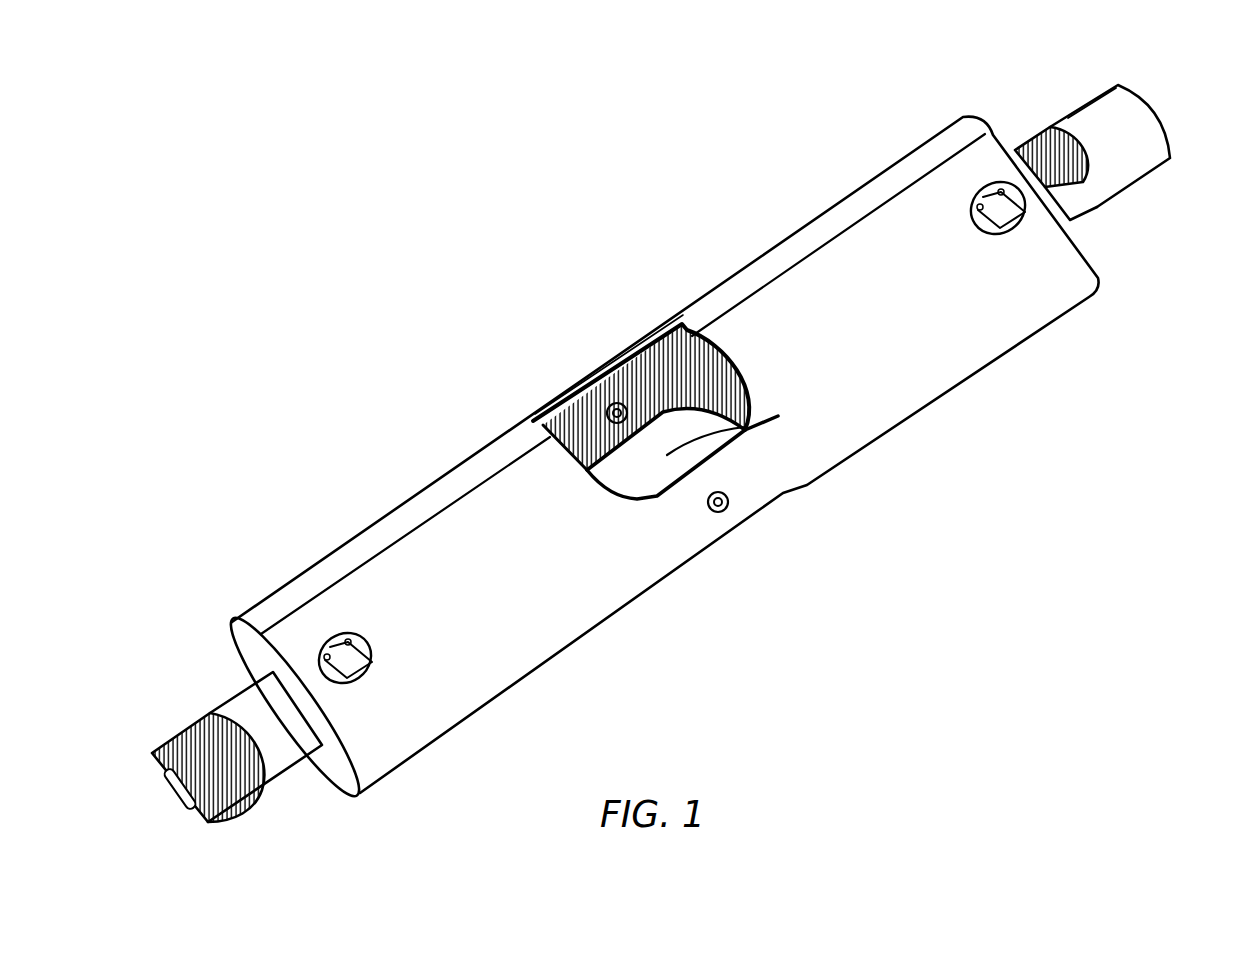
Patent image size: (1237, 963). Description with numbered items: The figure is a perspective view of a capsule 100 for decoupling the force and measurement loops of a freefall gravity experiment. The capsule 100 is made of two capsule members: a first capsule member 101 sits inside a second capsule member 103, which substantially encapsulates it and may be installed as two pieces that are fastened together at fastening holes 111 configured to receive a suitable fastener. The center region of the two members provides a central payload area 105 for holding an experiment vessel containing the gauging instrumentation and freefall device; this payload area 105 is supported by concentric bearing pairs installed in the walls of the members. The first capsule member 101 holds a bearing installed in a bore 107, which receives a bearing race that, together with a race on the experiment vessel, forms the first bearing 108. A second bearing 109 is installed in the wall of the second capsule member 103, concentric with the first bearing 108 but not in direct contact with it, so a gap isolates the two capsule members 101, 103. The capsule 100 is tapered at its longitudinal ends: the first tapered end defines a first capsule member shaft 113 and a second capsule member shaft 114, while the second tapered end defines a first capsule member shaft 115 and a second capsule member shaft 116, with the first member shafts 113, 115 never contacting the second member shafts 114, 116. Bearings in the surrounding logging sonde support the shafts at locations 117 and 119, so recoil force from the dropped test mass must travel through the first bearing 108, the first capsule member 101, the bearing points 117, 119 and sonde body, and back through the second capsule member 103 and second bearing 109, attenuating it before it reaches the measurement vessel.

The capsule 100 is at (522, 256).
The first capsule member 101 is at (637, 353).
The second capsule member 103 is at (730, 292).
The central payload area 105 is at (778, 420).
The bore 107 is at (585, 387).
The first bearing 108 is at (578, 378).
The second bearing 109 is at (729, 502).
The fastening holes 111 is at (322, 642).
The first capsule member shaft 113 is at (210, 790).
The second capsule member shaft 114 is at (268, 743).
The first capsule member shaft 115 is at (1097, 207).
The second capsule member shaft 116 is at (1127, 155).
The bearing contact locations 117 is at (230, 687).
The bearing contact locations 119 is at (1087, 103).